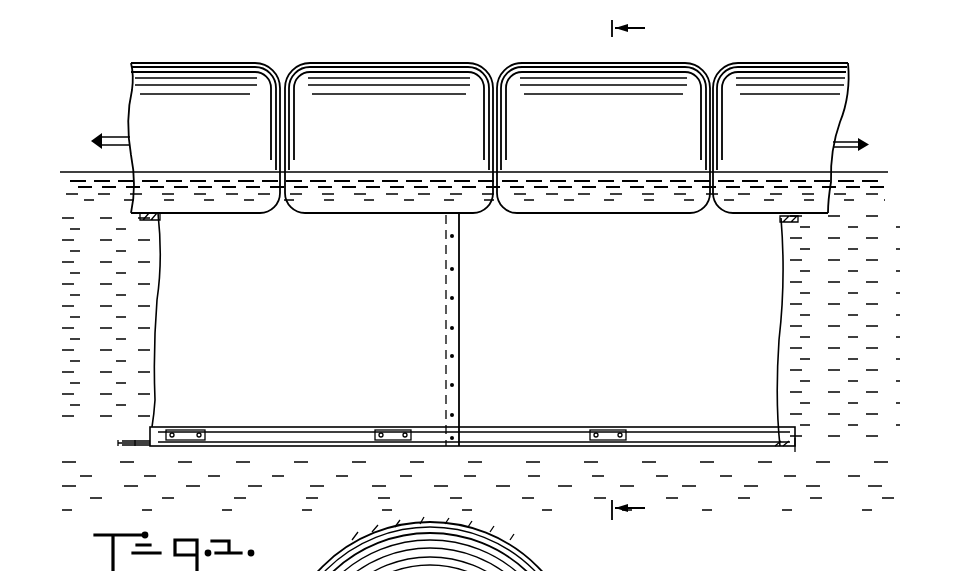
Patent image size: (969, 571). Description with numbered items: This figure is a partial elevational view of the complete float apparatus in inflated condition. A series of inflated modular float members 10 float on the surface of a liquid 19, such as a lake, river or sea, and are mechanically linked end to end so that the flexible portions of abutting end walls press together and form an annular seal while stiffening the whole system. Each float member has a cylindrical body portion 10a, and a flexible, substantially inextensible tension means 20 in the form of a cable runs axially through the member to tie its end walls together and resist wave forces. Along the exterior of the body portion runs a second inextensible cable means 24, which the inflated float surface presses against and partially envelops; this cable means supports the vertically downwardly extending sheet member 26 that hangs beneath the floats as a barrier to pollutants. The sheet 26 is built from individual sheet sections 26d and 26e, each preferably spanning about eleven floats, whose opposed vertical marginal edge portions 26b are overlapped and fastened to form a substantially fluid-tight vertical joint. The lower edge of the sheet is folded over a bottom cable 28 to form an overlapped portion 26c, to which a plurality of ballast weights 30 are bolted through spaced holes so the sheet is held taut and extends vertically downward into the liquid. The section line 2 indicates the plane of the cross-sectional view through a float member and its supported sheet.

The section line 2 is at (638, 269).
The modular float member 10 is at (395, 72).
The body portion 10a is at (520, 546).
The liquid 19 is at (862, 184).
The tension means 20 is at (864, 144).
The cable means 24 is at (796, 223).
The sheet member 26 is at (482, 360).
The vertical marginal edge portions 26b is at (460, 314).
The overlapped portion 26c is at (300, 436).
The sheet section 26d is at (762, 393).
The sheet section 26e is at (175, 383).
The bottom cable 28 is at (136, 448).
The ballast weights 30 is at (197, 440).